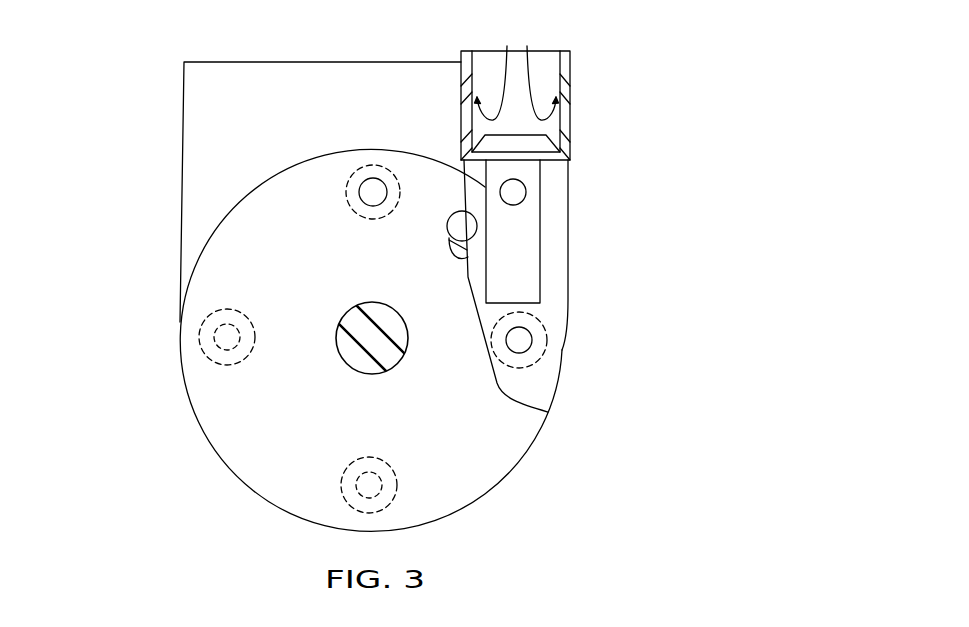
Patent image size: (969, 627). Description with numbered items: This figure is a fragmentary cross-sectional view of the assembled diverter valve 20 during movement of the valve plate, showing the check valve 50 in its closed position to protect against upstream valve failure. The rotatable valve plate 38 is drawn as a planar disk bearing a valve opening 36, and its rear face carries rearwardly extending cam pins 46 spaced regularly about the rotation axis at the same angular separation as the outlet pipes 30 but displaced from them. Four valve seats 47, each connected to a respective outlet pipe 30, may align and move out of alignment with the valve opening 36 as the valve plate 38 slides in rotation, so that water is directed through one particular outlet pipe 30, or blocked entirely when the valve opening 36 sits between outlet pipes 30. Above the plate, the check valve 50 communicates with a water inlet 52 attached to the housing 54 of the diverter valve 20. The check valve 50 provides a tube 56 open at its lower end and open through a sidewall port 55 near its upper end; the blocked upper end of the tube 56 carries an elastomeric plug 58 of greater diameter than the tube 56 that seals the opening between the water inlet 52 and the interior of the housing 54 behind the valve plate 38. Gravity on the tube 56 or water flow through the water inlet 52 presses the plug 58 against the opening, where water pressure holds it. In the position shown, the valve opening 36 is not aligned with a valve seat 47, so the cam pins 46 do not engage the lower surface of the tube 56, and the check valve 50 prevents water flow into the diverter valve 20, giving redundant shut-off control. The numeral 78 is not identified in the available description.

The diverter valve 20 is at (143, 65).
The outlet pipes 30 is at (380, 320).
The valve opening 36 is at (476, 211).
The valve plate 38 is at (487, 438).
The cam pins 46 is at (205, 359).
The valve seats 47 is at (346, 186).
The check valve 50 is at (533, 222).
The water inlet 52 is at (466, 52).
The housing 54 is at (182, 196).
The sidewall port 55 is at (520, 190).
The tube 56 is at (541, 253).
The elastomeric plug 58 is at (571, 124).
The biasing member 78 is at (530, 79).